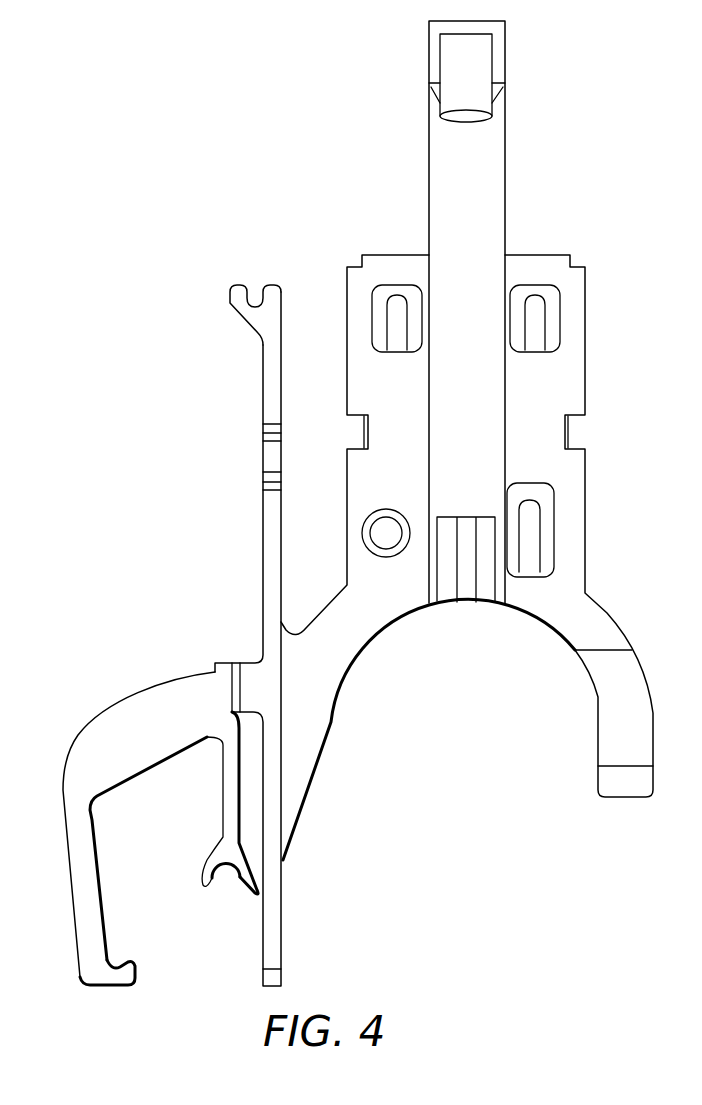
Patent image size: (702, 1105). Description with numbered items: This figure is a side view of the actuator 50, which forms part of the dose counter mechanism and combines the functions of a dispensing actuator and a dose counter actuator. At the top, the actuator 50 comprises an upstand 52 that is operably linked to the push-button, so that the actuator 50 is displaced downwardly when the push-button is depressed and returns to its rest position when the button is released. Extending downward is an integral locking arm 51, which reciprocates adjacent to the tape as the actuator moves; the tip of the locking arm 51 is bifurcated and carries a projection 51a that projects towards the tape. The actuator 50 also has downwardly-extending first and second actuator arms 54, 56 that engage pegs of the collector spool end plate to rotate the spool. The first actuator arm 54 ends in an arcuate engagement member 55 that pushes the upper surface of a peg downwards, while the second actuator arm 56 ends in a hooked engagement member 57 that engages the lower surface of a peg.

The actuator 50 is at (199, 125).
The locking arm 51 is at (263, 460).
The projection 51a is at (230, 297).
The upstand 52 is at (506, 63).
The first actuator arm 54 is at (223, 790).
The arcuate engagement member 55 is at (240, 880).
The second actuator arm 56 is at (65, 875).
The hooked engagement member 57 is at (140, 963).